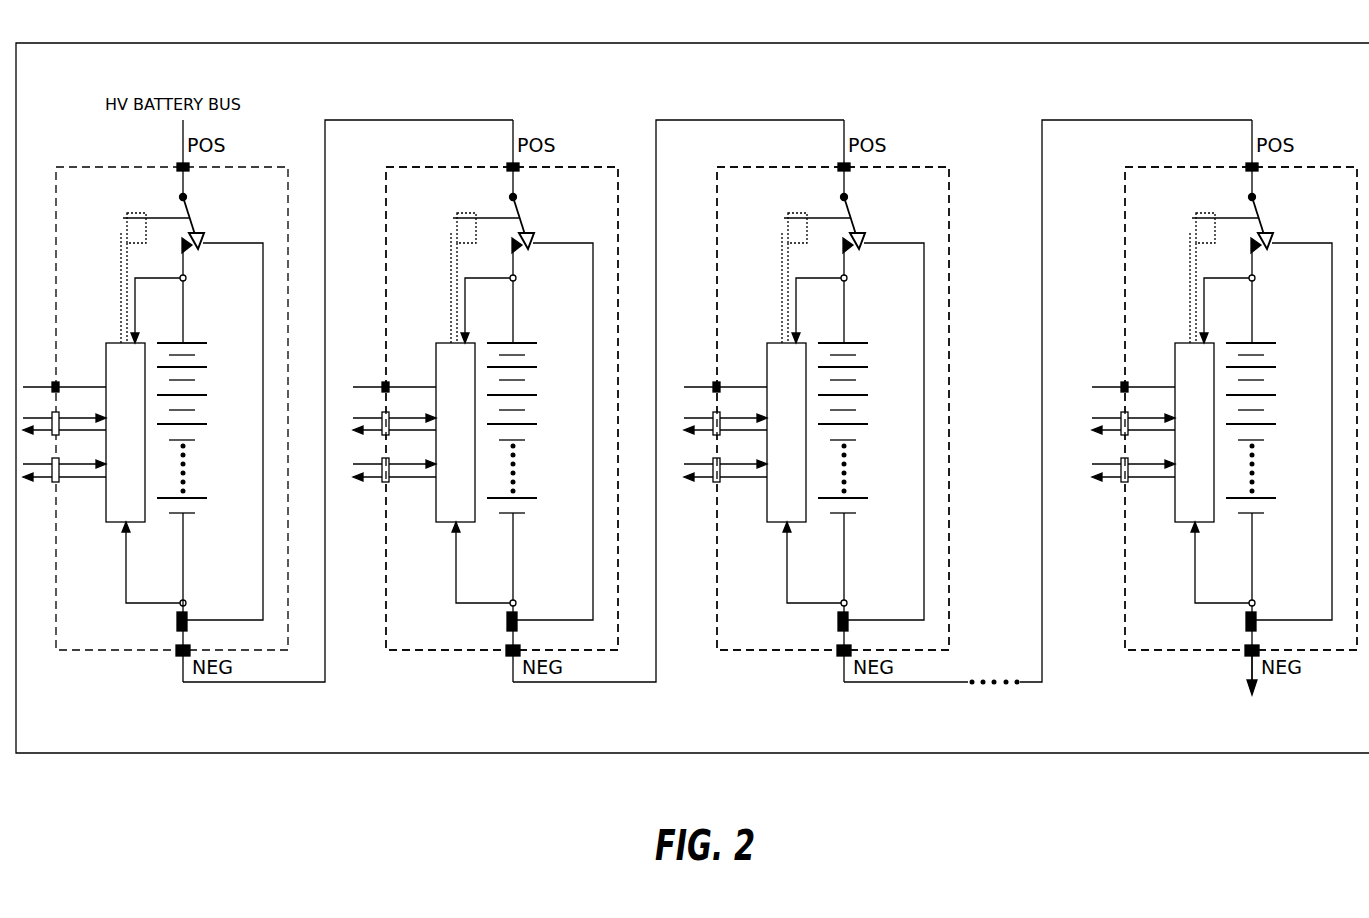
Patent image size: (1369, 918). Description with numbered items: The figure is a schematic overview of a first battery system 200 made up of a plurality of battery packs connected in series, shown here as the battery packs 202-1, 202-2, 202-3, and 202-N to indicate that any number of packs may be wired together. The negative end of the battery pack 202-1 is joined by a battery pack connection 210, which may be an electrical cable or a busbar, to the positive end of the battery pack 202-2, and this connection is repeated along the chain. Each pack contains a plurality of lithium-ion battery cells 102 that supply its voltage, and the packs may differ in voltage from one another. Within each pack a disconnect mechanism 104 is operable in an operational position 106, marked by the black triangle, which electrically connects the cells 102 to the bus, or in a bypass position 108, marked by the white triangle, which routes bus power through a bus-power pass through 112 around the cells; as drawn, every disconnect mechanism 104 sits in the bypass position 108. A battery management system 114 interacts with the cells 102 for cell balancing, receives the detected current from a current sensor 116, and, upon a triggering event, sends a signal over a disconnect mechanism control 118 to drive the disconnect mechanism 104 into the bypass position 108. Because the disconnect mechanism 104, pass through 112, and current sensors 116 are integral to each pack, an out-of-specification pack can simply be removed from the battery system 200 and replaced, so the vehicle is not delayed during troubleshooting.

The first battery system 200 is at (1362, 83).
The battery pack 202-1 is at (281, 200).
The battery pack 202-2 is at (611, 201).
The battery pack 202-3 is at (942, 201).
The battery pack 202-N is at (1350, 201).
The battery pack connection 210 is at (181, 147).
The lithium-ion battery cells 102 is at (211, 406).
The disconnect mechanism 104 is at (187, 210).
The operational position 106 is at (183, 244).
The bypass position 108 is at (203, 236).
The bus-power pass through 112 is at (265, 295).
The battery management system 114 is at (141, 382).
The current sensor 116 is at (137, 316).
The disconnect mechanism control 118 is at (121, 288).